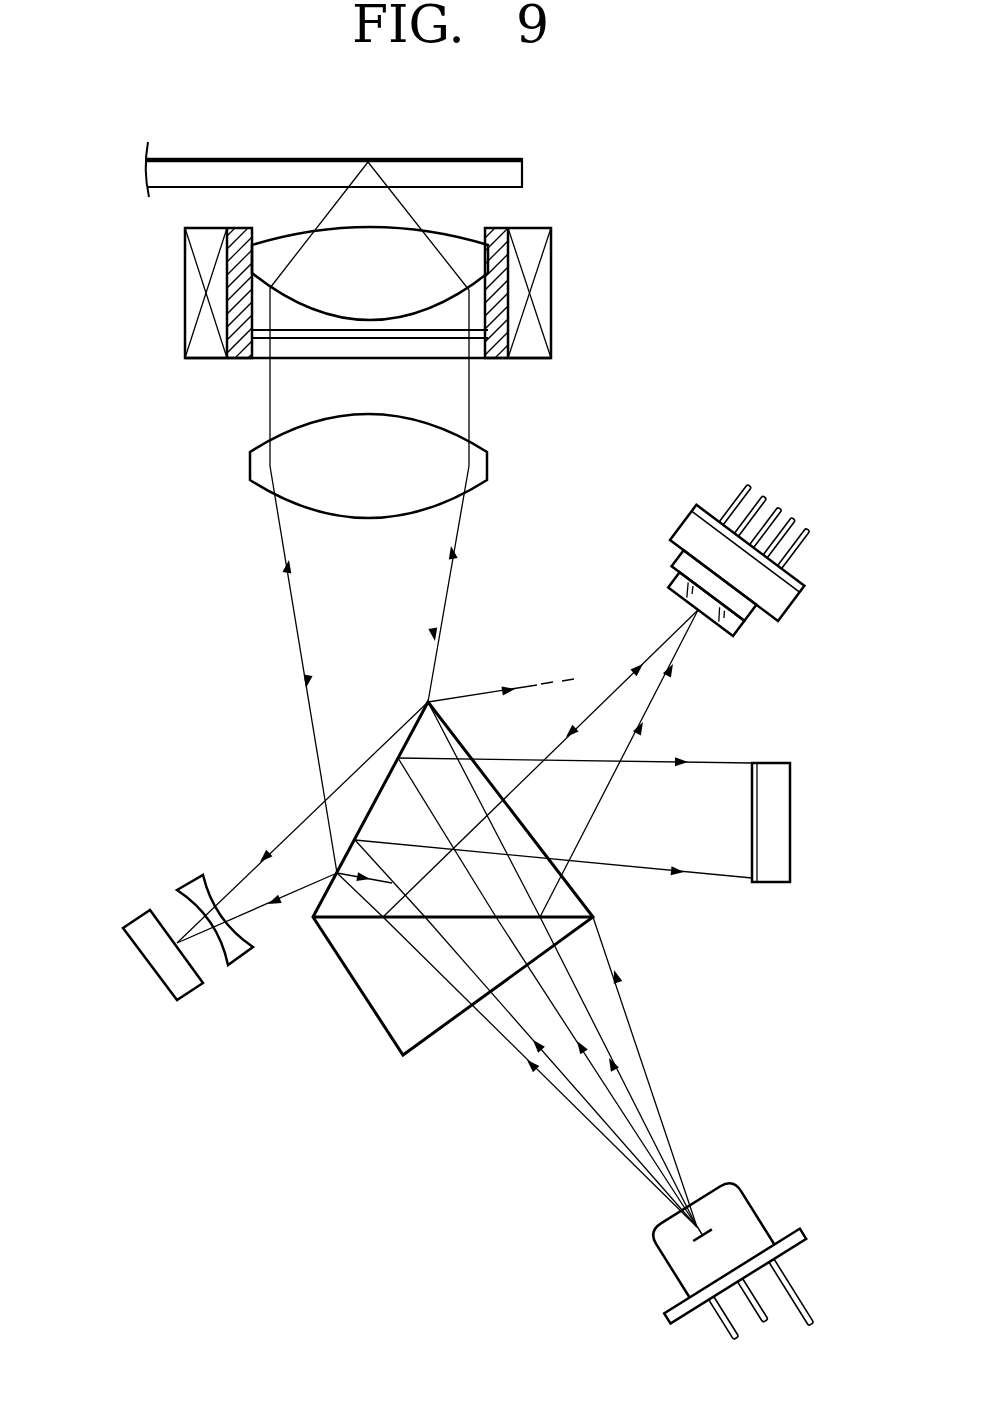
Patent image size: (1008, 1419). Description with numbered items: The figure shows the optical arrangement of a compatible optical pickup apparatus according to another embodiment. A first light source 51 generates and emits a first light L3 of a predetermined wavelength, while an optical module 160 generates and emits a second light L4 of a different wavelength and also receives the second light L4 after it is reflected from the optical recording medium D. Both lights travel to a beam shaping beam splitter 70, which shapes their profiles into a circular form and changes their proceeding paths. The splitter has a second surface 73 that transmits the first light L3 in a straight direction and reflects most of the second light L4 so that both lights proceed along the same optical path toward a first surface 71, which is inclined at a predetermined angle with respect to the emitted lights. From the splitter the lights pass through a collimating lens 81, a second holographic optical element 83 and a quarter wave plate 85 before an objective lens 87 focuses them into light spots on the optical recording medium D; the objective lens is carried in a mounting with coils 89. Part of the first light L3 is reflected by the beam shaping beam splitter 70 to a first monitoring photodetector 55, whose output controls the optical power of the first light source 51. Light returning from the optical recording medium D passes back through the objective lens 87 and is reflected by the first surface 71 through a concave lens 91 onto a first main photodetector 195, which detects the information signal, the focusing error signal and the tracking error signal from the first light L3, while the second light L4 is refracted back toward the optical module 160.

The optical recording medium D is at (513, 177).
The objective lens 87 is at (277, 246).
The ¼ wave plate 85 is at (258, 331).
The second holographic optical element 83 is at (270, 352).
The actuator coils 89 is at (497, 353).
The collimating lens 81 is at (258, 466).
The beam shaping beam splitter 70 is at (625, 977).
The first surface 71 is at (398, 757).
The second surface 73 is at (563, 915).
The optical module 160 is at (812, 465).
The second light L4 is at (660, 643).
The first light source 51 is at (743, 1210).
The first light L3 is at (593, 1127).
The first monitoring photodetector 55 is at (775, 826).
The concave lens 91 is at (192, 887).
The first main photodetector 195 is at (140, 927).